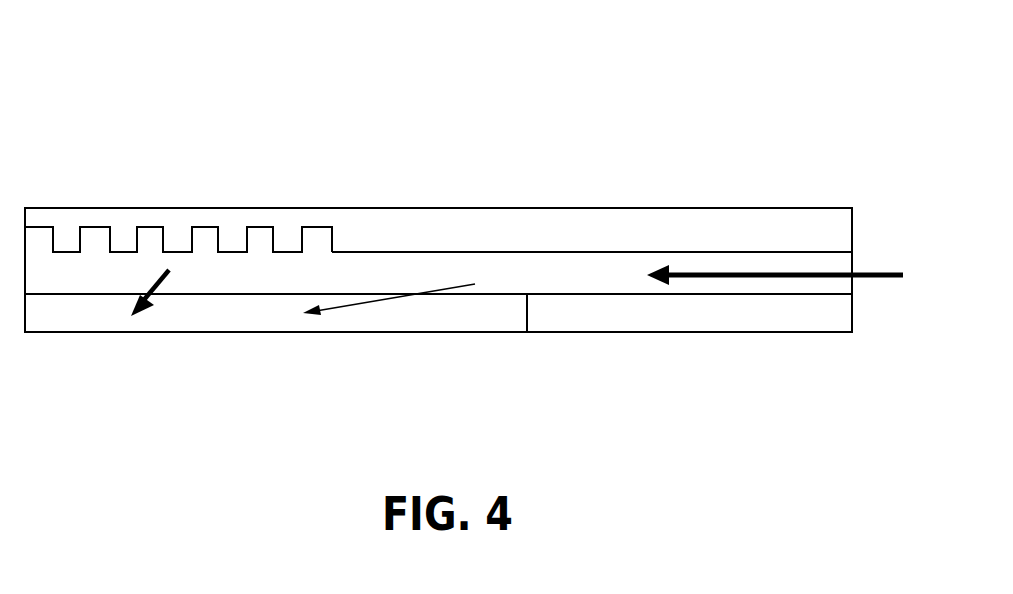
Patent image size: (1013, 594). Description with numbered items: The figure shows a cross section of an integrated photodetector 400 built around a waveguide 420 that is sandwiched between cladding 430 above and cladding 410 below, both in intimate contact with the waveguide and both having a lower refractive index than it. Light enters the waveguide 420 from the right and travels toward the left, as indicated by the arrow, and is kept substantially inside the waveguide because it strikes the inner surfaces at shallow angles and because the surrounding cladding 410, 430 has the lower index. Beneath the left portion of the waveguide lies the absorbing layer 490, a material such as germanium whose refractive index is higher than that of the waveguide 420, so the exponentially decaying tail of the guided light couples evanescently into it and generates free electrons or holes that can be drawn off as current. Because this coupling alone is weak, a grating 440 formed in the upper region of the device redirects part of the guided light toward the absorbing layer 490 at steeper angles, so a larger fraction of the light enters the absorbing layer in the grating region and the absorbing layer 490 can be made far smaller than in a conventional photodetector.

The photodetector 400 is at (92, 114).
The cladding 410 is at (779, 322).
The waveguide 420 is at (563, 267).
The cladding 430 is at (762, 218).
The grating 440 is at (205, 227).
The absorbing layer 490 is at (248, 322).